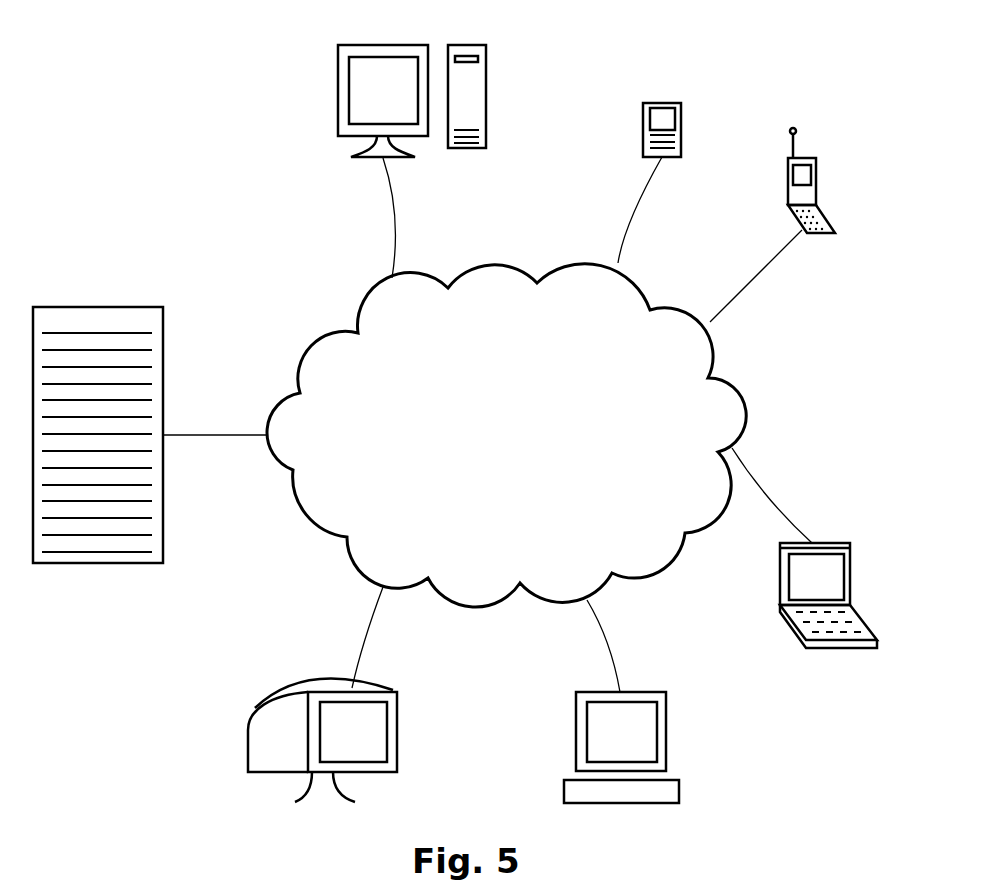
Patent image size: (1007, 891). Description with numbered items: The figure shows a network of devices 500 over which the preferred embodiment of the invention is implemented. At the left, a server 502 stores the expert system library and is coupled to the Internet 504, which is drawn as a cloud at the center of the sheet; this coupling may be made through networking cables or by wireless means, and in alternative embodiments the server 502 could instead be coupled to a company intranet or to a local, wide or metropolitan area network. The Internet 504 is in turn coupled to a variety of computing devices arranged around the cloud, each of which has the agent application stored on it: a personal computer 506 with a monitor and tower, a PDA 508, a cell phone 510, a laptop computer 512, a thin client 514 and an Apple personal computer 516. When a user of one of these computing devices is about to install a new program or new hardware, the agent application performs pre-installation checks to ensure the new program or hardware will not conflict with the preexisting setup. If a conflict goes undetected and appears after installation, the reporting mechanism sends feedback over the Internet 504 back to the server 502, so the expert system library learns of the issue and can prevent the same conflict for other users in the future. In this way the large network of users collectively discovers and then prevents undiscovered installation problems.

The network of devices 500 is at (168, 86).
The server 502 is at (105, 306).
The Internet 504 is at (312, 345).
The personal computer 506 is at (486, 95).
The PDA 508 is at (681, 123).
The cell phone 510 is at (816, 180).
The laptop computer 512 is at (850, 568).
The thin client 514 is at (666, 727).
The Apple personal computer 516 is at (397, 730).